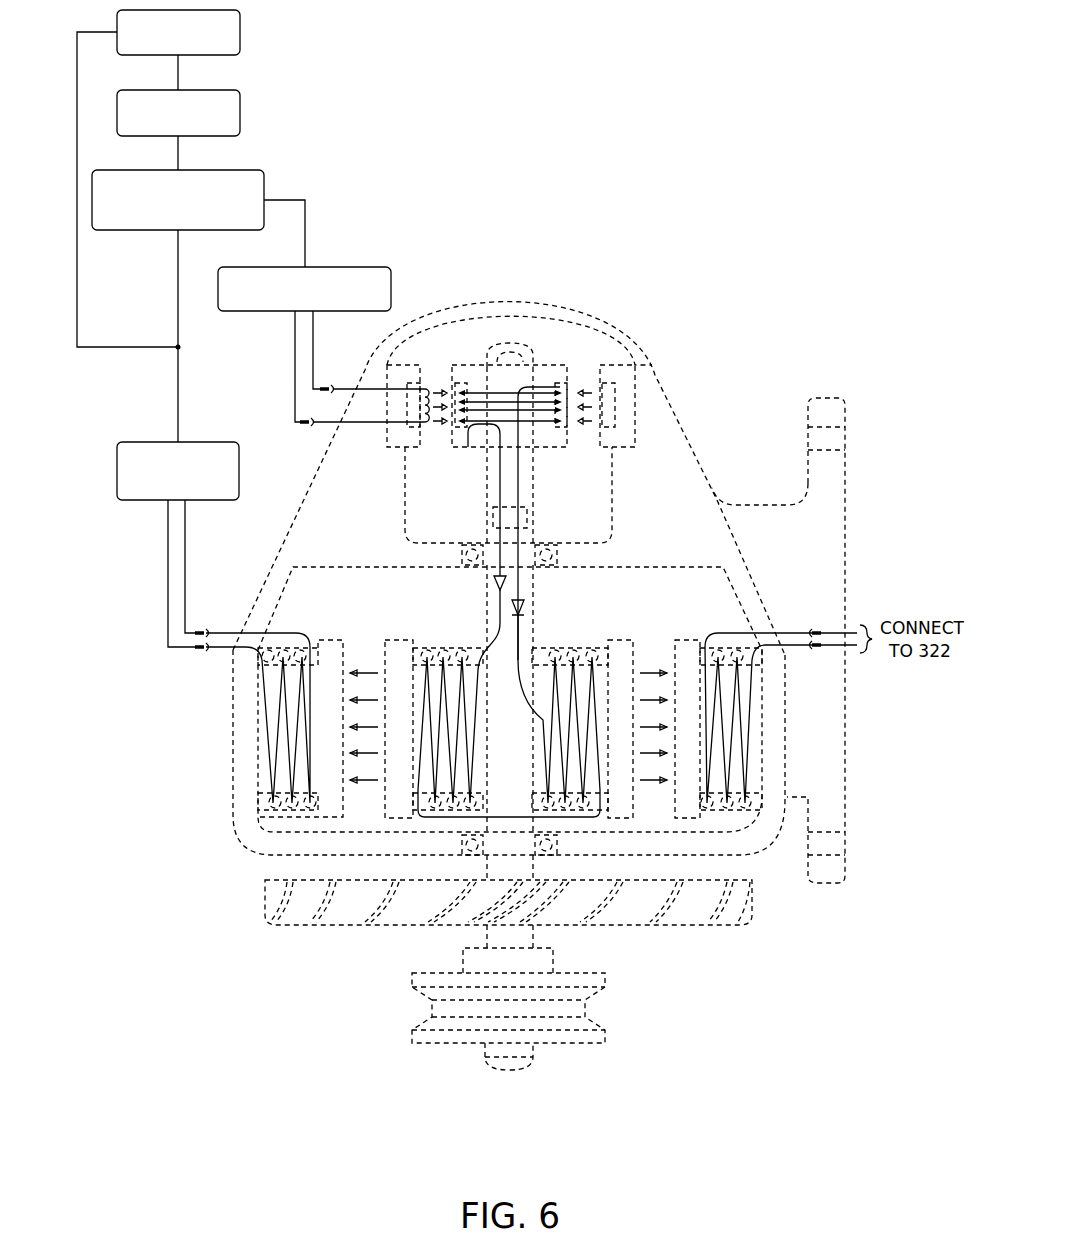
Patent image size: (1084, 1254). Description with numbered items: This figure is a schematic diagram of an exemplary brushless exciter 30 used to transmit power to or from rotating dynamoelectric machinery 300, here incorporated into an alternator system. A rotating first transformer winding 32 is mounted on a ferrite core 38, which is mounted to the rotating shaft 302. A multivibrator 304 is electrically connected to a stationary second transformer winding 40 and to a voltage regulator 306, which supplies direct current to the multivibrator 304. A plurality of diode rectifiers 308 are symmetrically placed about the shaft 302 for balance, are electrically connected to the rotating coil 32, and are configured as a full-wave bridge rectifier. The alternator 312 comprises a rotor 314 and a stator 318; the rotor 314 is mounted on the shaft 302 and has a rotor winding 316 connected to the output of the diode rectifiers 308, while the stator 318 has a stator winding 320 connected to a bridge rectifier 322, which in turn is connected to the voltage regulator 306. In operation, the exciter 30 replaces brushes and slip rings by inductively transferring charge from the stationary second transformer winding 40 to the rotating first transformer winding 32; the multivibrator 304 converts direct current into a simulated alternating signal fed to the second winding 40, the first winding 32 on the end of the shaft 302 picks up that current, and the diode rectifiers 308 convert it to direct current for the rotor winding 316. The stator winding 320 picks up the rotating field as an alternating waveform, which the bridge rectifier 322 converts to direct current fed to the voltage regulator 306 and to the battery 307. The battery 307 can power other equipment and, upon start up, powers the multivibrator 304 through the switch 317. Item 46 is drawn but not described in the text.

The battery 307 is at (241, 30).
The switch 317 is at (241, 110).
The voltage regulator 306 is at (244, 170).
The multivibrator 304 is at (372, 264).
The bridge rectifier 322 is at (146, 441).
The rotating shaft 302 is at (500, 340).
The brushless exciter 30 is at (640, 323).
The second transformer winding 40 is at (433, 426).
The first transformer winding 32 is at (470, 437).
The ferrite core 38 is at (558, 448).
The exciter stator 46 is at (635, 433).
The alternator 312 is at (705, 601).
The diode rectifiers 308 is at (492, 584).
The rotor 314 is at (622, 643).
The stator 318 is at (327, 640).
The rotor winding 316 is at (423, 682).
The stator winding 320 is at (750, 745).
The rotating dynamoelectric machinery 300 is at (776, 925).